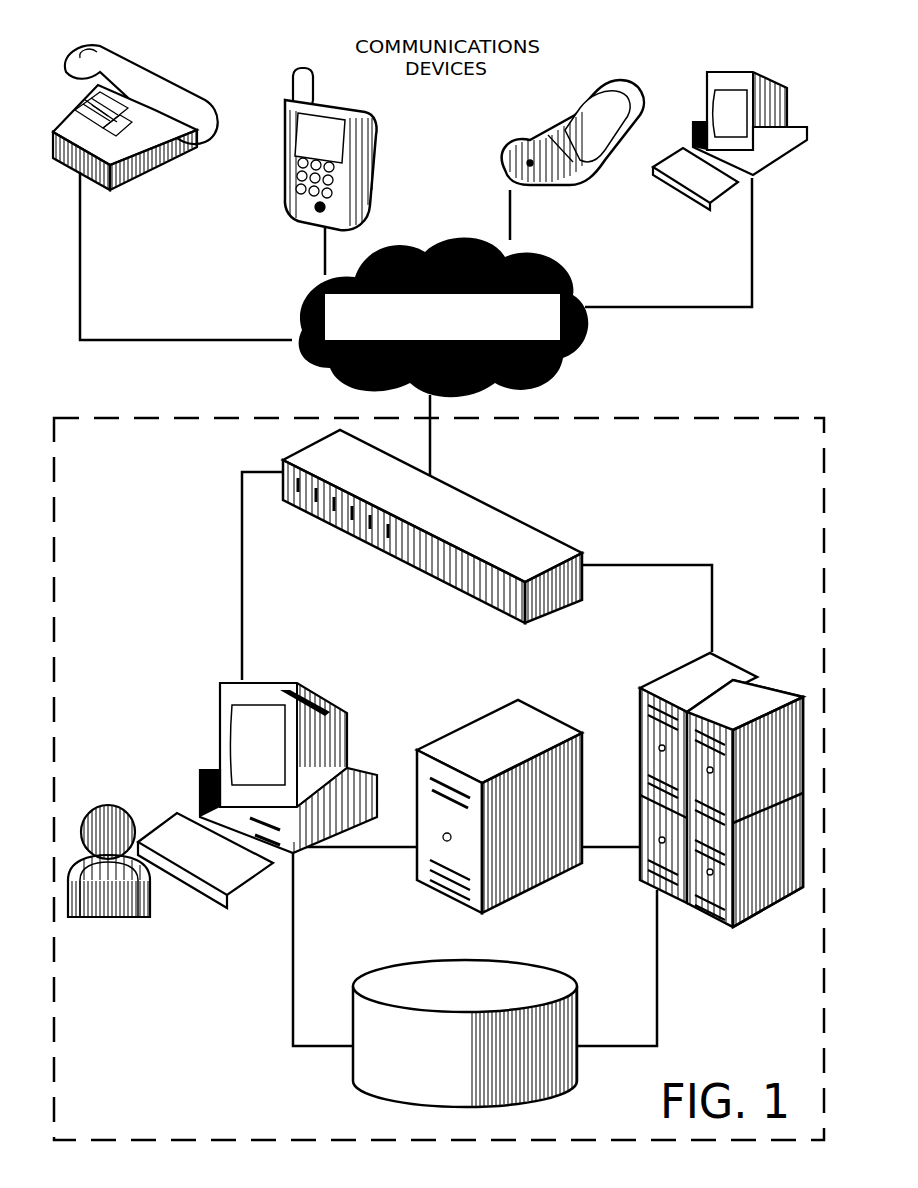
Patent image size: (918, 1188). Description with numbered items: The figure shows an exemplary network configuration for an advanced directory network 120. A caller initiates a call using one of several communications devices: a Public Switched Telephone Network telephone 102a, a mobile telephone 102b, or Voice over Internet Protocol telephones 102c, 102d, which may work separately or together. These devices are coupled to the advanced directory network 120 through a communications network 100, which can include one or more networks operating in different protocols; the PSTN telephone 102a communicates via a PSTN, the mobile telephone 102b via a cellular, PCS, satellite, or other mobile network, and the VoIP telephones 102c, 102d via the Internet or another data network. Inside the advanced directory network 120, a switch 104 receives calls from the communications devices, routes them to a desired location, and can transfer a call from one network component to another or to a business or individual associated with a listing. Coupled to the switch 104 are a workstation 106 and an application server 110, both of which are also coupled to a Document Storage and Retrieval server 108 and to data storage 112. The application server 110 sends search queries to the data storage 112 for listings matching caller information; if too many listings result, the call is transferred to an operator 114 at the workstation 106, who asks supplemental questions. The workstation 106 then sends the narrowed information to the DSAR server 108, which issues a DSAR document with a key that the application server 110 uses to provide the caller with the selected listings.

The communications network 100 is at (307, 312).
The PSTN telephone 102a is at (140, 182).
The mobile telephone 102b is at (283, 145).
The VoIP telephone 102c is at (507, 150).
The VoIP telephone 102d is at (697, 198).
The switch 104 is at (552, 528).
The workstation 106 is at (350, 757).
The Document Storage and Retrieval (DSAR) server 108 is at (567, 718).
The application server 110 is at (718, 655).
The data storage 112 is at (353, 1082).
The operator 114 is at (140, 917).
The advanced directory network 120 is at (706, 398).